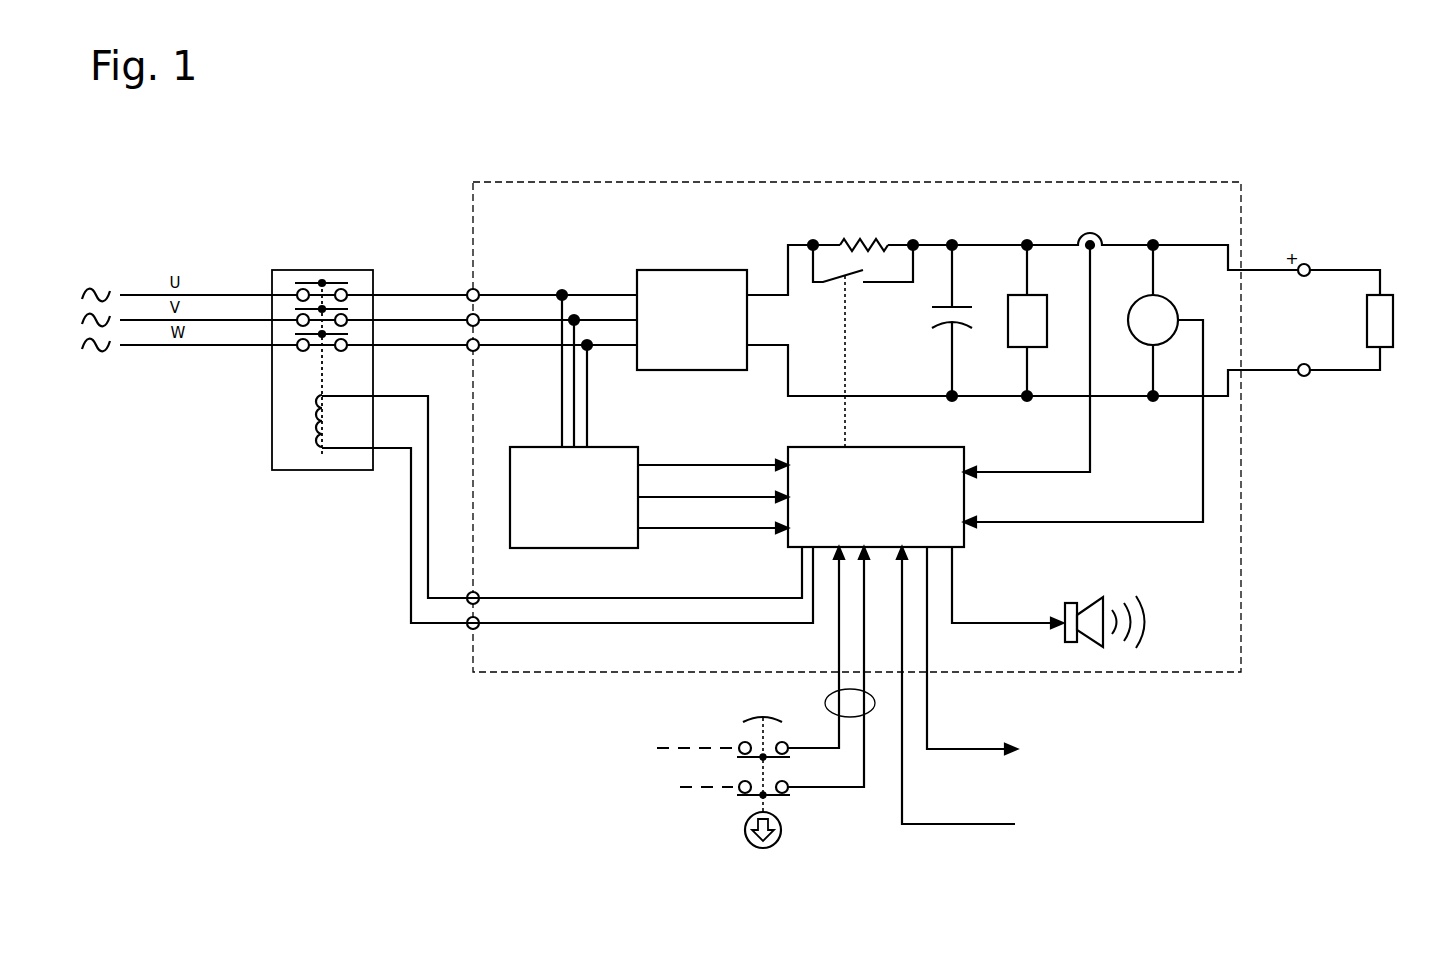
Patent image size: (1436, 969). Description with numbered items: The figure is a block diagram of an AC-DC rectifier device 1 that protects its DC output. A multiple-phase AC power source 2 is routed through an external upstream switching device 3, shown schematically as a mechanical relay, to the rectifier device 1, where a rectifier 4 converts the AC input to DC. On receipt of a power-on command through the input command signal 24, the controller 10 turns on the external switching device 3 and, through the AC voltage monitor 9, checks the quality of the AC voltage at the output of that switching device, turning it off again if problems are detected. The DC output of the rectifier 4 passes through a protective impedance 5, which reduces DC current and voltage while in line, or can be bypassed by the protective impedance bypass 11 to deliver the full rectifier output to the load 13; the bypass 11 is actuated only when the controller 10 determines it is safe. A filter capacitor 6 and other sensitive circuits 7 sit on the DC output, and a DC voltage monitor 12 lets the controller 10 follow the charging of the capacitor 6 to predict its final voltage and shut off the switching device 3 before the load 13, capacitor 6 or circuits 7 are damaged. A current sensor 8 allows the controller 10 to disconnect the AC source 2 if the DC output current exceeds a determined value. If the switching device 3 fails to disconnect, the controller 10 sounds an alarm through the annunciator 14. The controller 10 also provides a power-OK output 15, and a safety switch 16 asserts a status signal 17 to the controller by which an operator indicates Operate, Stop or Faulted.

The AC-DC rectifier device 1 is at (1153, 182).
The AC power source 2 is at (100, 301).
The external upstream switching device 3 is at (542, 434).
The rectifier 4 is at (692, 305).
The protective impedance 5 is at (864, 229).
The filter capacitor 6 is at (958, 320).
The other sensitive circuits 7 is at (1027, 320).
The current sensor 8 is at (1036, 338).
The AC voltage monitor 9 is at (649, 481).
The controller 10 is at (876, 481).
The protective impedance bypass 11 is at (863, 346).
The DC voltage monitor 12 is at (1088, 386).
The load 13 is at (1399, 305).
The annunciator 14 is at (1048, 597).
The power-OK output 15 is at (1028, 654).
The safety switch 16 is at (786, 830).
The status signal 17 is at (826, 700).
The input command signal 24 is at (1025, 692).